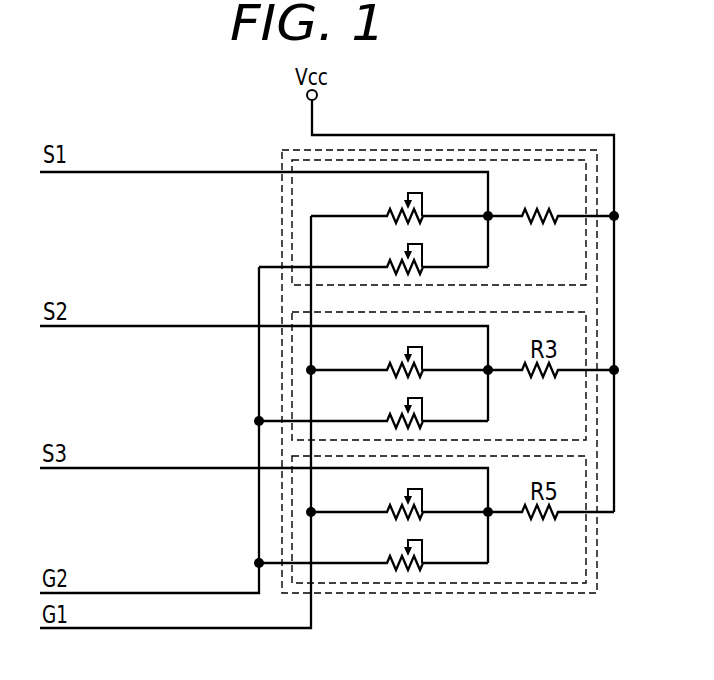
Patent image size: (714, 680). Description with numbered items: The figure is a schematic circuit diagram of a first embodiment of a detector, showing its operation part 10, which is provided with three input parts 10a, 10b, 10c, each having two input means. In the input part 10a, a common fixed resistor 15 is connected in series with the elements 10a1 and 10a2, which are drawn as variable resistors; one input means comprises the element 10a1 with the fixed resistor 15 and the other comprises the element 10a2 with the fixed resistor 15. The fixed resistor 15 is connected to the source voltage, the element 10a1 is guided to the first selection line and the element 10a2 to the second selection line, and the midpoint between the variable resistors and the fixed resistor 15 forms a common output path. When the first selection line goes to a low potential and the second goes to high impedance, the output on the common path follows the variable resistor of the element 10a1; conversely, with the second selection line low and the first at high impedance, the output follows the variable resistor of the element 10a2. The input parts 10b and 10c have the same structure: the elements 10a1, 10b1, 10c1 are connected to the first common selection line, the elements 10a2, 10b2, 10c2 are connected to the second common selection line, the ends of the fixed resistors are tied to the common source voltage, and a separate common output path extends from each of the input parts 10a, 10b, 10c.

The operation part 10 is at (503, 160).
The common fixed resistor 15 is at (569, 184).
The input part 10a is at (588, 188).
The input part 10b is at (588, 341).
The input part 10c is at (588, 493).
The element 10a1 is at (350, 201).
The element 10a2 is at (350, 253).
The element 10b1 is at (350, 356).
The element 10b2 is at (350, 410).
The element 10c1 is at (350, 500).
The element 10c2 is at (350, 551).